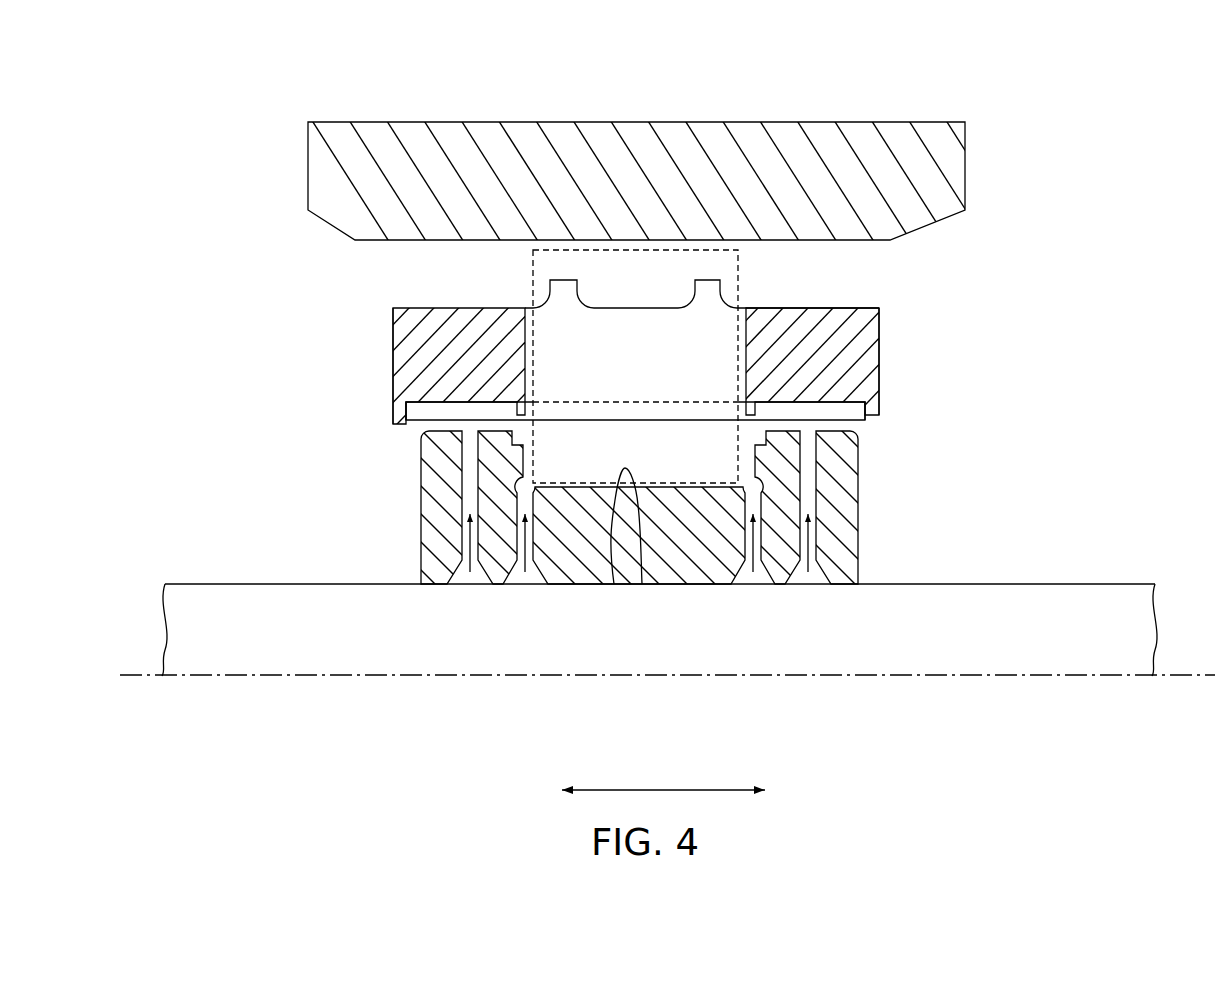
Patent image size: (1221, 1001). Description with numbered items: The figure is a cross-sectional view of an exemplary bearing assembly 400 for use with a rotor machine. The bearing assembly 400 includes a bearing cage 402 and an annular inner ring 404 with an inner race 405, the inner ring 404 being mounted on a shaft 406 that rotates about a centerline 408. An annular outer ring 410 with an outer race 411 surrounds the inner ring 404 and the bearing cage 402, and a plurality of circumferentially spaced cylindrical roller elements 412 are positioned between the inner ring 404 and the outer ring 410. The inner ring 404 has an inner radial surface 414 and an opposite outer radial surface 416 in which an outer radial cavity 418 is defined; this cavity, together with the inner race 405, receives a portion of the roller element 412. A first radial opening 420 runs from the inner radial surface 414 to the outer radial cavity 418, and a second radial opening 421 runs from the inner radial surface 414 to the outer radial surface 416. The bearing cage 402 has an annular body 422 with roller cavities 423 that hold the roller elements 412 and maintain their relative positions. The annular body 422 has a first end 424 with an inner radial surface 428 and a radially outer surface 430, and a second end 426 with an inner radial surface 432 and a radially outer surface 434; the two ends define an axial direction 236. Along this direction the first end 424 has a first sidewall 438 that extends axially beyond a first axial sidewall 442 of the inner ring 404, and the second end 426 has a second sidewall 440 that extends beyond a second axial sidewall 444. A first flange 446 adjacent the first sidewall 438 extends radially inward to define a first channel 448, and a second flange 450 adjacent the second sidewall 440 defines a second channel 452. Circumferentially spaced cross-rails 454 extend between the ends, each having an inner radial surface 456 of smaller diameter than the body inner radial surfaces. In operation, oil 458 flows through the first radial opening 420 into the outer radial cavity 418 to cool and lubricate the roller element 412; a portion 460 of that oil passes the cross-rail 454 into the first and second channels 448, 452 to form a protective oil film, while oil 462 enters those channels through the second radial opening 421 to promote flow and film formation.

The axial direction 236 is at (667, 790).
The bearing assembly 400 is at (876, 86).
The bearing cage 402 is at (927, 297).
The inner ring 404 is at (942, 461).
The inner race 405 is at (614, 584).
The shaft 406 is at (1058, 584).
The centerline 408 is at (1193, 673).
The outer ring 410 is at (640, 118).
The outer race 411 is at (635, 293).
The roller element 412 is at (740, 262).
The inner radial surface 414 is at (666, 584).
The outer radial surface 416 is at (879, 392).
The outer radial cavity 418 is at (656, 451).
The first radial opening 420 is at (562, 565).
The second radial opening 421 is at (428, 553).
The annular body 422 is at (874, 316).
The roller cavity 423 is at (573, 334).
The first end 424 is at (375, 296).
The second end 426 is at (871, 297).
The inner radial surface 428 is at (432, 402).
The radially outer surface 430 is at (434, 308).
The inner radial surface 432 is at (845, 402).
The radially outer surface 434 is at (853, 308).
The first sidewall 438 is at (393, 338).
The second sidewall 440 is at (879, 340).
The first axial sidewall 442 is at (421, 505).
The second axial sidewall 444 is at (858, 505).
The first flange 446 is at (405, 410).
The first channel 448 is at (436, 421).
The second flange 450 is at (879, 410).
The second channel 452 is at (848, 422).
The cross-rail 454 is at (549, 410).
The inner radial surface 456 is at (650, 410).
The oil 458 is at (492, 560).
The portion of oil 460 is at (485, 415).
The oil 462 is at (428, 553).